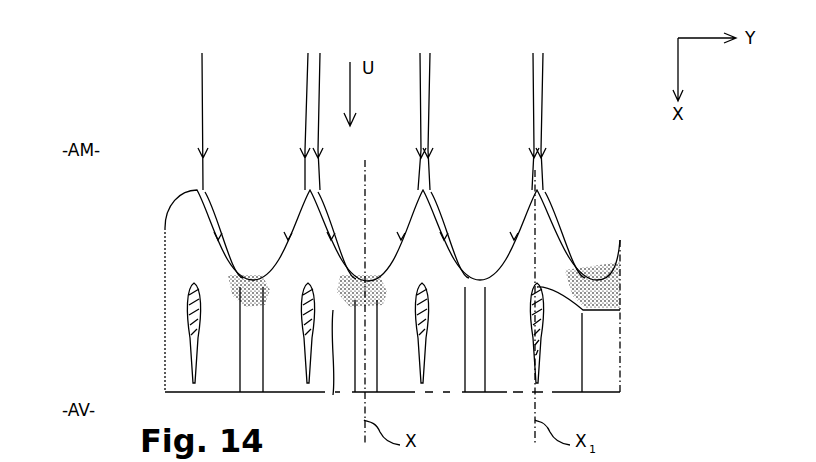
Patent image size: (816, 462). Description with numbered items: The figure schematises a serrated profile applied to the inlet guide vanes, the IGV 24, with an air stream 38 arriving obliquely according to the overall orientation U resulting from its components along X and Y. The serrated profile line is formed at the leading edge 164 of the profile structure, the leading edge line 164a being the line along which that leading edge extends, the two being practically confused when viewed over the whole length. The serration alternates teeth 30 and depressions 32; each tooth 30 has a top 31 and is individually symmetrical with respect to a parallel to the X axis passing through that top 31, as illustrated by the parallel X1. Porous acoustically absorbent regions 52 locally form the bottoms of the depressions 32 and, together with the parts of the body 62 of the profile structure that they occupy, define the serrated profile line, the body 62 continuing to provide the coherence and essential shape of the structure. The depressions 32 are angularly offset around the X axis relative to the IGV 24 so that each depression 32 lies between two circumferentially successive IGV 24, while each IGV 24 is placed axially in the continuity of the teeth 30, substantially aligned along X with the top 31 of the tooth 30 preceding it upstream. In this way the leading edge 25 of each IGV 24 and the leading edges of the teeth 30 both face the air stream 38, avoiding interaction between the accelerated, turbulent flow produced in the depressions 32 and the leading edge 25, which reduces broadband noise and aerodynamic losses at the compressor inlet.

The IGV 24 is at (303, 312).
The leading edge 25 is at (197, 283).
The teeth 30 is at (192, 227).
The top 31 is at (546, 172).
The depressions 32 is at (366, 239).
The air stream 38 is at (545, 125).
The porous acoustically absorbent regions 52 is at (333, 395).
The body 62 is at (603, 362).
The leading edge 164 is at (163, 215).
The leading edge line 164a is at (563, 221).